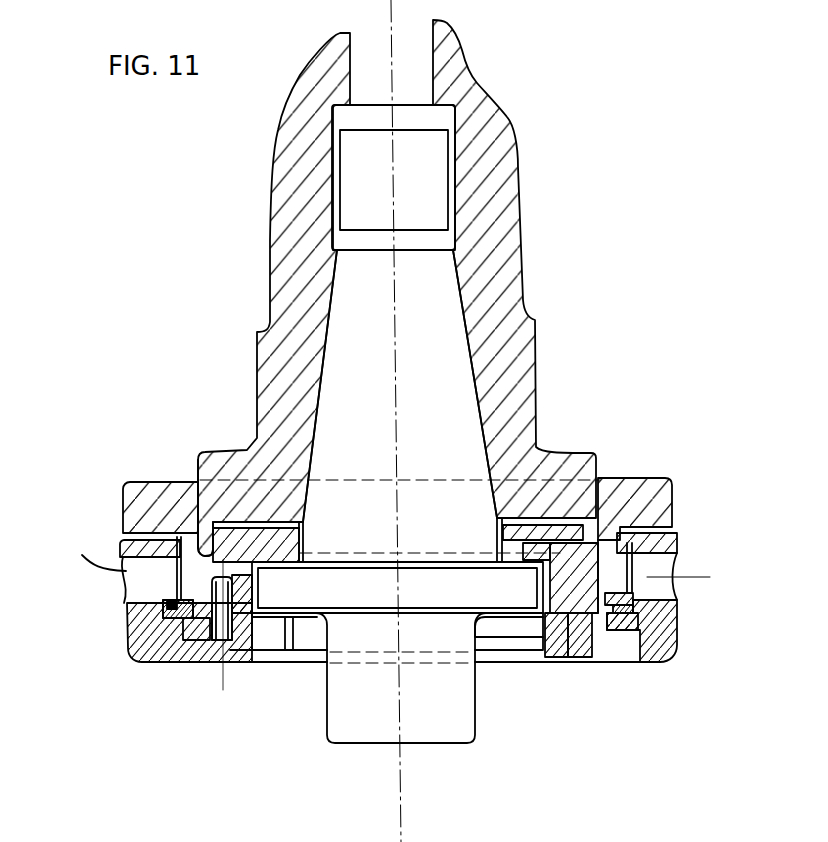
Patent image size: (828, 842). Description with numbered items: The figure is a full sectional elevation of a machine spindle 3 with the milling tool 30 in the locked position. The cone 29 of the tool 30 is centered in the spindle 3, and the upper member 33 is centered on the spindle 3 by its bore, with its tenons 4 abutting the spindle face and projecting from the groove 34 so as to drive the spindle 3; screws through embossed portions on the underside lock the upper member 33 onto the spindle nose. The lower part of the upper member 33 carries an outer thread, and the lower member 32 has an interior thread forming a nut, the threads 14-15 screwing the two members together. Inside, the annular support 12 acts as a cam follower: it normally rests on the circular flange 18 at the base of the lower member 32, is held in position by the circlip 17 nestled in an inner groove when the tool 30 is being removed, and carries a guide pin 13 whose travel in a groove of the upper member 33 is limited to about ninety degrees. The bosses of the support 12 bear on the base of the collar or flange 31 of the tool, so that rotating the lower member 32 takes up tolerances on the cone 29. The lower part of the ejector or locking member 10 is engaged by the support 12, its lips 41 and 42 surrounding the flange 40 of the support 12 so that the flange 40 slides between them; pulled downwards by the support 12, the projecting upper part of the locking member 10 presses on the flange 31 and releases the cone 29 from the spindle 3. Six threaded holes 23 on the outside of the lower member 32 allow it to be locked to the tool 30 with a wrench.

The spindle 3 is at (568, 455).
The tenons 4 is at (305, 537).
The locking member 10 is at (562, 663).
The annular support 12 is at (244, 665).
The guide pin 13 is at (223, 690).
The outer thread and interior thread 14-15 is at (75, 555).
The circlip 17 is at (160, 655).
The circular flange 18 is at (195, 665).
The threaded holes 23 is at (122, 593).
The cone 29 is at (373, 392).
The tool 30 is at (360, 735).
The flange 31 is at (284, 600).
The lower member 32 is at (113, 538).
The upper member 33 is at (160, 487).
The groove 34 is at (215, 518).
The flange 40 is at (635, 663).
The lip 41 is at (678, 547).
The lip 42 is at (545, 629).